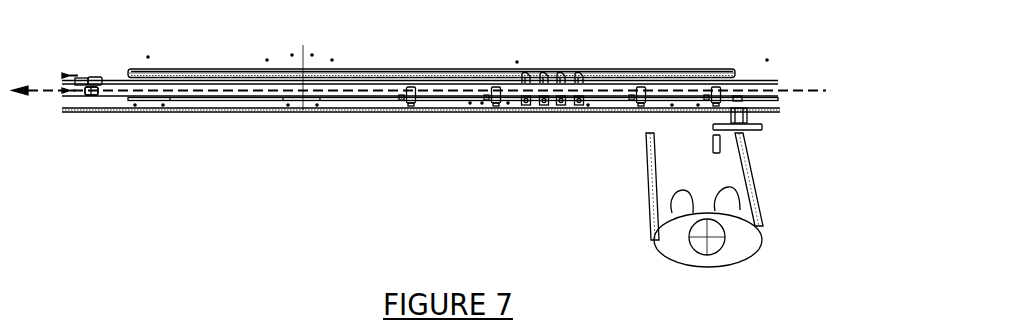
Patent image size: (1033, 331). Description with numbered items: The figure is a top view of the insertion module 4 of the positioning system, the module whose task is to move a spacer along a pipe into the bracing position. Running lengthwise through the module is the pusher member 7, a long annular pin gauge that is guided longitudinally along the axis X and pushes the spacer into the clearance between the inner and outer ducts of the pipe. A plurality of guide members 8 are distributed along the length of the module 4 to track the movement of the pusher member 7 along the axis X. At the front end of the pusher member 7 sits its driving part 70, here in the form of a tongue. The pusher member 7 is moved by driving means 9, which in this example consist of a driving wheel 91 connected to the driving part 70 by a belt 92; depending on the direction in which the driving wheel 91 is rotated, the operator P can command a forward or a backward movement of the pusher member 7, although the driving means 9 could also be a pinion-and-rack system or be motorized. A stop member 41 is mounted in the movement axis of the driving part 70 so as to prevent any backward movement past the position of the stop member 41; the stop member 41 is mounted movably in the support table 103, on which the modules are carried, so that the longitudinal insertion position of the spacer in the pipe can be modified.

The insertion module 4 is at (433, 112).
The pusher member 7 is at (100, 96).
The guide members 8 is at (411, 87).
The driving means 9 is at (737, 56).
The stop member 41 is at (545, 78).
The driving part 70 is at (88, 80).
The driving wheel 91 is at (762, 130).
The belt 92 is at (256, 81).
The support table 103 is at (338, 33).
The operator P is at (652, 243).
The axis X is at (431, 92).